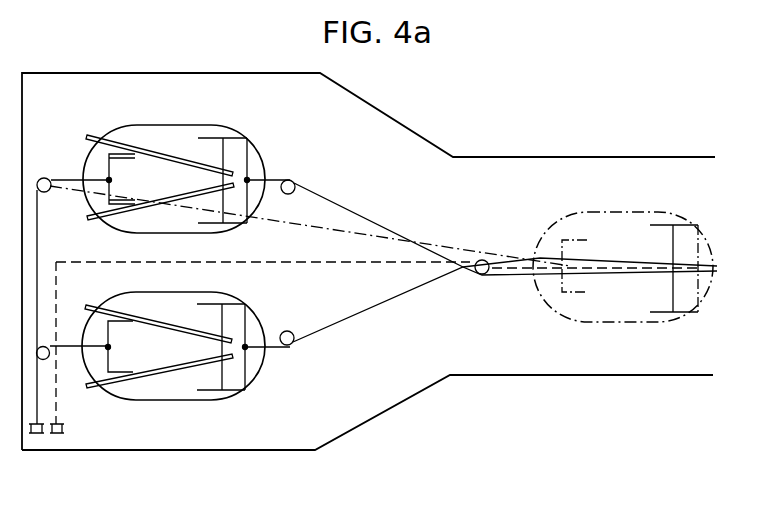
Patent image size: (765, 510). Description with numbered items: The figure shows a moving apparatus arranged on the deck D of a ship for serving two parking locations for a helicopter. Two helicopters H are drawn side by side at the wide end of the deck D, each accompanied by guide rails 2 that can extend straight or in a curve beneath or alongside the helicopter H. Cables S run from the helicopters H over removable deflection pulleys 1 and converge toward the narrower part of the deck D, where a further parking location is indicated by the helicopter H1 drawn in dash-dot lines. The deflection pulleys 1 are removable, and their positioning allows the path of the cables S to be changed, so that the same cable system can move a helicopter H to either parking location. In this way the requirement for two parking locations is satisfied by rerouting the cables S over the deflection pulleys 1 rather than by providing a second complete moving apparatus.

The deflection pulley 1 is at (44, 178).
The guide rail 2 is at (157, 153).
The helicopter H is at (172, 128).
The helicopter H1 is at (629, 212).
The deck D is at (401, 141).
The cable S is at (386, 228).